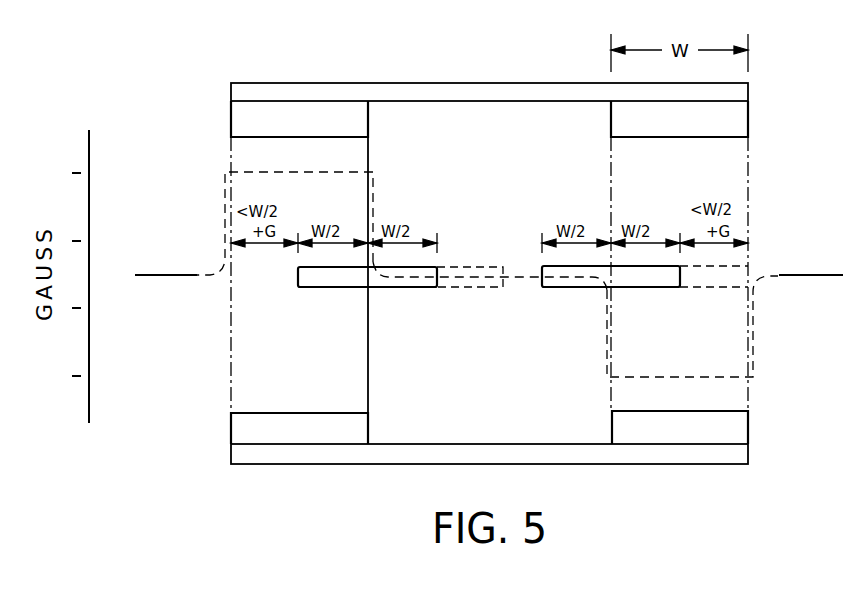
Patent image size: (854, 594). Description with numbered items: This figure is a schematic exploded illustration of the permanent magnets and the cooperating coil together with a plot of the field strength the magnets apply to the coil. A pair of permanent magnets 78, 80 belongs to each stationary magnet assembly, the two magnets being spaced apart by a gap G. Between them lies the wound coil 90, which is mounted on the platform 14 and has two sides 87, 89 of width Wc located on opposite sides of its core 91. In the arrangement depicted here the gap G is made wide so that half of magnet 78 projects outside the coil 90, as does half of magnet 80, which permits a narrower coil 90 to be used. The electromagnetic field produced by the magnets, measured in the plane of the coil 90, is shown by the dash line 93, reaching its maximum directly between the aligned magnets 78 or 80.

The platform 14 is at (785, 272).
The permanent magnet 78 is at (728, 120).
The permanent magnet 80 is at (311, 113).
The side of the coil 87 is at (390, 290).
The side of the coil 89 is at (575, 290).
The wound coil 90 is at (425, 290).
The core 91 is at (525, 268).
The dash line 93 is at (225, 232).